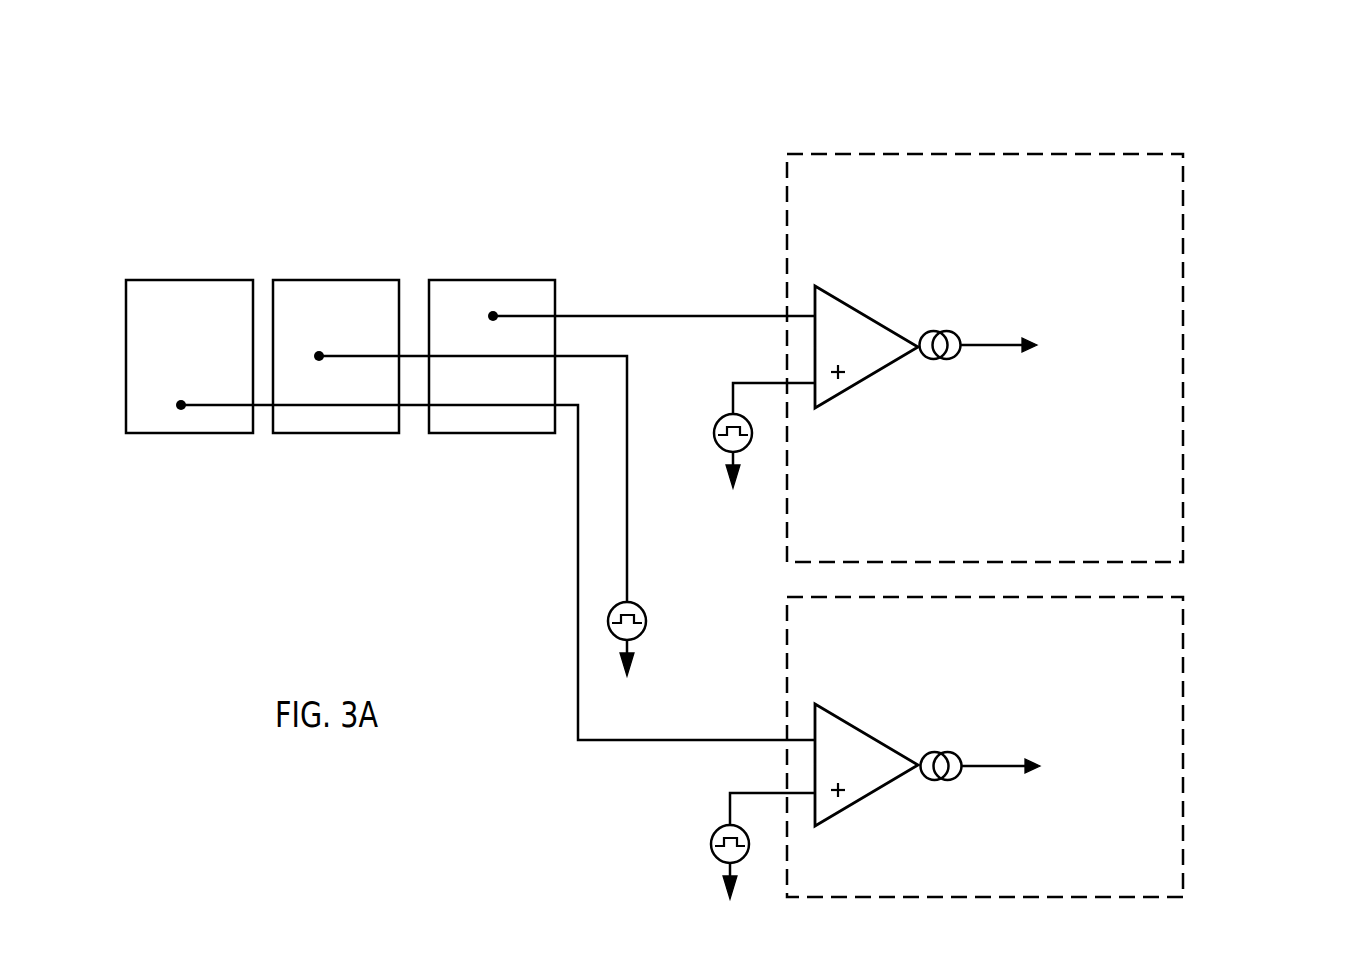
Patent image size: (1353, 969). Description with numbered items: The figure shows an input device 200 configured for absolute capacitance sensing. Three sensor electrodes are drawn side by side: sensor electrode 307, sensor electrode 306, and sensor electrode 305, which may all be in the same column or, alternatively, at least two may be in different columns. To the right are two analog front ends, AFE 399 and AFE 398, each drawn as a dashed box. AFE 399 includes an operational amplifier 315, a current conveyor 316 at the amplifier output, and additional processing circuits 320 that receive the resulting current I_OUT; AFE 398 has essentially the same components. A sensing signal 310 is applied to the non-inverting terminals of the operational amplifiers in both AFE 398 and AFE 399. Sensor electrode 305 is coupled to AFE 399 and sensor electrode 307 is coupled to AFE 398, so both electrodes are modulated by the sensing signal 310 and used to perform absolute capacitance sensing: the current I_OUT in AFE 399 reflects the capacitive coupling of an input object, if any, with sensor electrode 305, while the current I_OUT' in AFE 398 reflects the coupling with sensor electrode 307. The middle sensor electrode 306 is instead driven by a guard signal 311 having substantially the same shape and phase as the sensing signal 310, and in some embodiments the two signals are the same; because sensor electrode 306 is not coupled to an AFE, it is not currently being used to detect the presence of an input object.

The input device 200 is at (1332, 118).
The sensor electrode 305 is at (464, 260).
The sensor electrode 306 is at (298, 260).
The sensor electrode 307 is at (165, 262).
The sensing signal 310 is at (695, 643).
The guard signal 311 is at (658, 625).
The operational amplifier 315 is at (915, 372).
The current conveyor 316 is at (966, 325).
The additional processing circuits 320 is at (1050, 347).
The AFE 398 is at (1050, 678).
The AFE 399 is at (1050, 249).